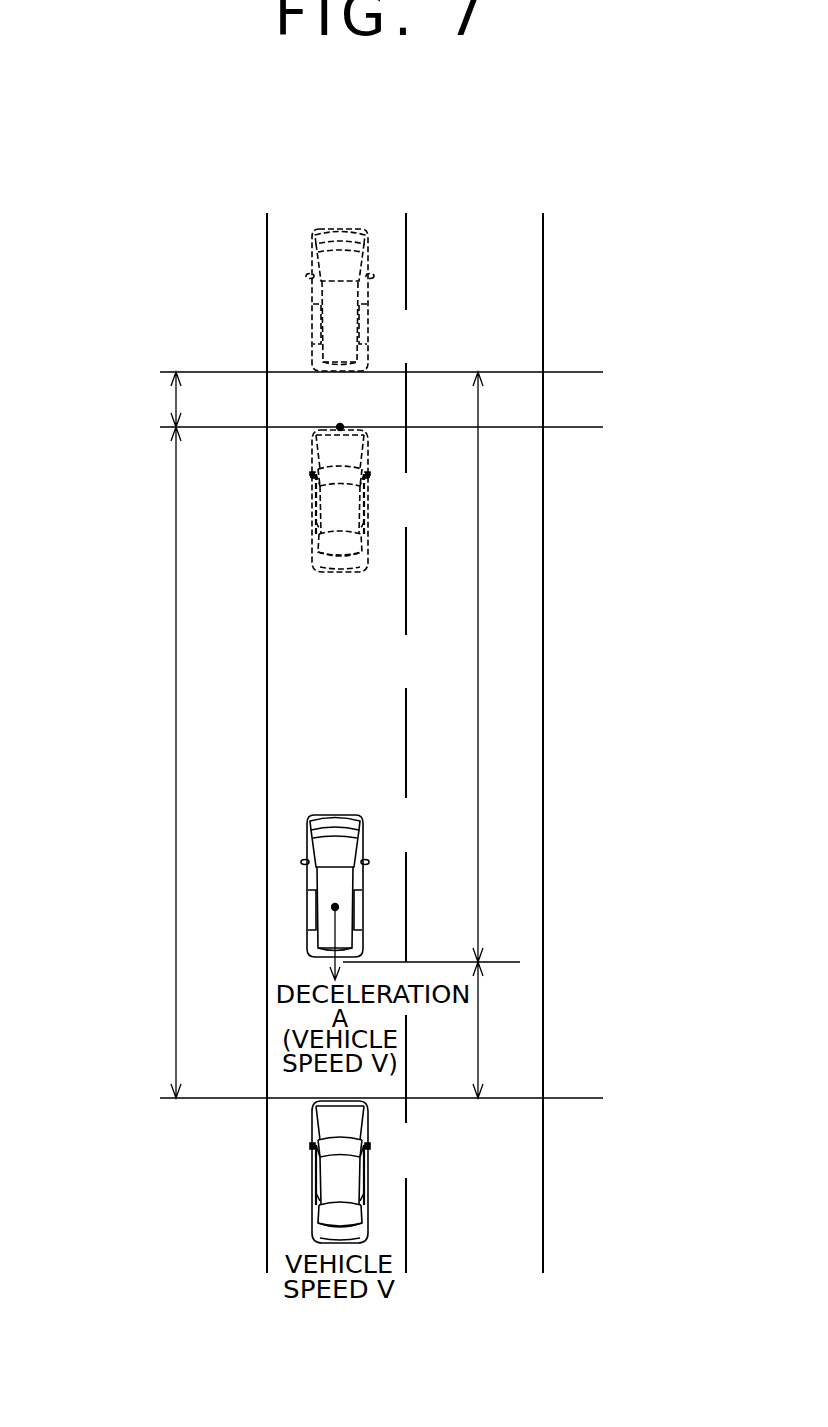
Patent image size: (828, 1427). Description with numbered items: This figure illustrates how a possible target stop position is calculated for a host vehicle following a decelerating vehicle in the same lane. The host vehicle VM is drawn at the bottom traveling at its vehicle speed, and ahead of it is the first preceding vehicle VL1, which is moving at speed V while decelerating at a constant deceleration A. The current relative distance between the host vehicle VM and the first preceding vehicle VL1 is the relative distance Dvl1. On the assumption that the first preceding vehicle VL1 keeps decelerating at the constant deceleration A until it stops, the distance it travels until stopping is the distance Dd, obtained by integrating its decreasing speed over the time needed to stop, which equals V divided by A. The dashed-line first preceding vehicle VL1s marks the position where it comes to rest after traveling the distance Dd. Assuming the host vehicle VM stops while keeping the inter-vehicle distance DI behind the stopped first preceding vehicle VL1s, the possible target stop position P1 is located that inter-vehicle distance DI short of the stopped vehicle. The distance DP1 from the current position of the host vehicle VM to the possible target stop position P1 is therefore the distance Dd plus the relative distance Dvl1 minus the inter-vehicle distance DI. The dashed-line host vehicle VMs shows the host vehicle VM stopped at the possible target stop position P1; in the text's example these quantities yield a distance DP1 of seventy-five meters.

The stopped first preceding vehicle VL1s is at (311, 328).
The possible target stop position P1 is at (342, 427).
The inter-vehicle distance DI is at (153, 399).
The stopped host vehicle VMs is at (312, 486).
The distance to possible target stop position DP1 is at (144, 762).
The travel distance until stop Dd is at (499, 667).
The first preceding vehicle VL1 is at (308, 907).
The relative distance Dvl1 is at (505, 1030).
The host vehicle VM is at (312, 1153).